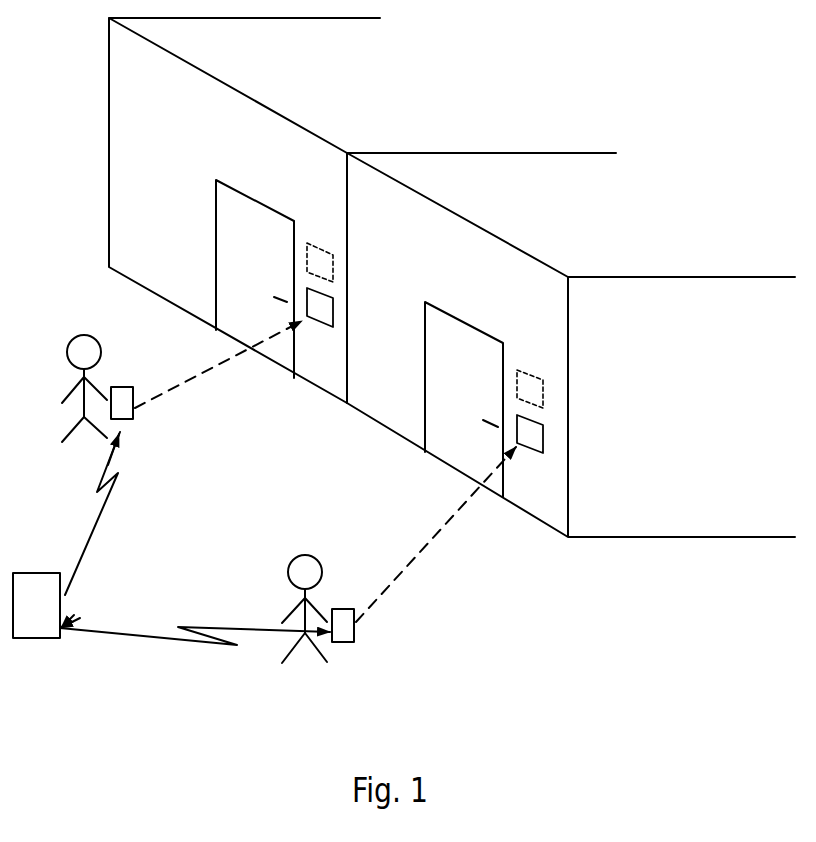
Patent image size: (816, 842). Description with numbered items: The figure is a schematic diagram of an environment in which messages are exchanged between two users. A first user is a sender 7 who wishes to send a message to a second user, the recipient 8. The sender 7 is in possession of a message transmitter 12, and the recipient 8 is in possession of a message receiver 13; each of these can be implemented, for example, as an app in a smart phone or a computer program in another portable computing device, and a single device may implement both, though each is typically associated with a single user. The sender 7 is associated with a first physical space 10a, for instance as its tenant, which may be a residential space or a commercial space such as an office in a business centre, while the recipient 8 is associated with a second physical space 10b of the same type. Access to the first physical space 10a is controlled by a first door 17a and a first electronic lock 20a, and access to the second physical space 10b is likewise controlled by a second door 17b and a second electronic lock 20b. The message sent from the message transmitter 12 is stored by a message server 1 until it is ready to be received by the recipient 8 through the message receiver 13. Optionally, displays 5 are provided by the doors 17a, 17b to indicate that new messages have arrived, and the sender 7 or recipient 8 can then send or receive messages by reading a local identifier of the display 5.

The message server 1 is at (44, 619).
The display 5 is at (318, 257).
The sender 7 is at (67, 348).
The recipient 8 is at (290, 570).
The first physical space 10a is at (388, 102).
The second physical space 10b is at (609, 229).
The message transmitter 12 is at (125, 386).
The message receiver 13 is at (343, 608).
The first door 17a is at (255, 213).
The second door 17b is at (457, 337).
The first electronic lock 20a is at (318, 328).
The second electronic lock 20b is at (525, 453).